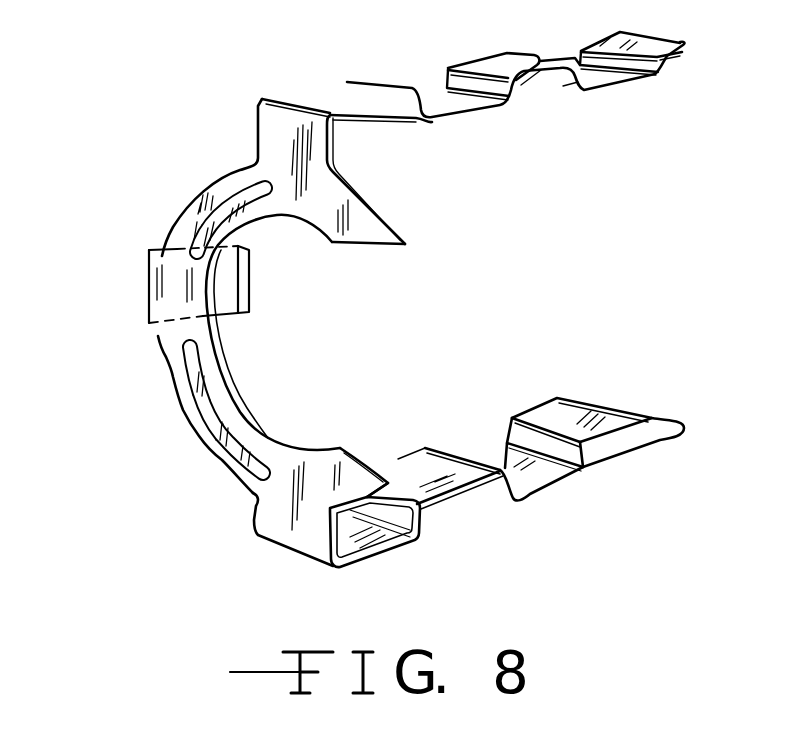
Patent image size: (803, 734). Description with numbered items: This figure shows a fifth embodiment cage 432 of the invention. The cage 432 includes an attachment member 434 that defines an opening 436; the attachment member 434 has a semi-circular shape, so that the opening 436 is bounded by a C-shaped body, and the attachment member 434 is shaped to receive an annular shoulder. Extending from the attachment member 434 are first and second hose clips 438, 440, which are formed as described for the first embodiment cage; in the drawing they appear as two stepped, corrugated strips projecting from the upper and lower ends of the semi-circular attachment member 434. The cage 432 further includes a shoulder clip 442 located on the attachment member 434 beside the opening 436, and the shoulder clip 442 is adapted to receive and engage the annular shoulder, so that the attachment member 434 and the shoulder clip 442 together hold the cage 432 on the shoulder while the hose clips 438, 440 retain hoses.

The fifth embodiment cage 432 is at (290, 90).
The attachment member 434 is at (167, 357).
The opening 436 is at (270, 377).
The first hose clip 438 is at (350, 82).
The second hose clip 440 is at (385, 550).
The shoulder clip 442 is at (249, 292).